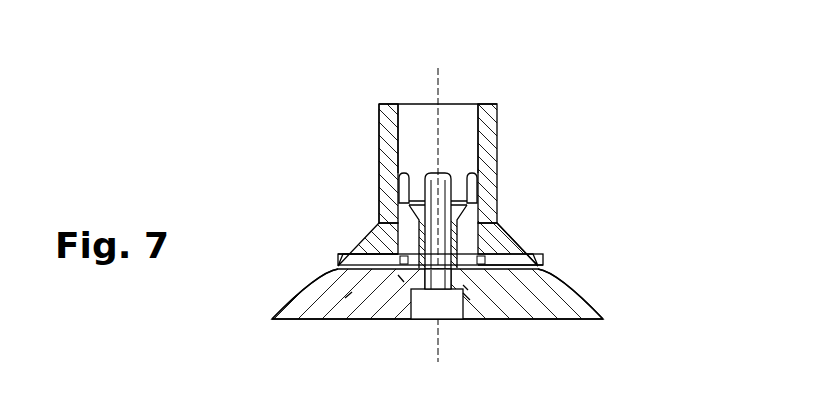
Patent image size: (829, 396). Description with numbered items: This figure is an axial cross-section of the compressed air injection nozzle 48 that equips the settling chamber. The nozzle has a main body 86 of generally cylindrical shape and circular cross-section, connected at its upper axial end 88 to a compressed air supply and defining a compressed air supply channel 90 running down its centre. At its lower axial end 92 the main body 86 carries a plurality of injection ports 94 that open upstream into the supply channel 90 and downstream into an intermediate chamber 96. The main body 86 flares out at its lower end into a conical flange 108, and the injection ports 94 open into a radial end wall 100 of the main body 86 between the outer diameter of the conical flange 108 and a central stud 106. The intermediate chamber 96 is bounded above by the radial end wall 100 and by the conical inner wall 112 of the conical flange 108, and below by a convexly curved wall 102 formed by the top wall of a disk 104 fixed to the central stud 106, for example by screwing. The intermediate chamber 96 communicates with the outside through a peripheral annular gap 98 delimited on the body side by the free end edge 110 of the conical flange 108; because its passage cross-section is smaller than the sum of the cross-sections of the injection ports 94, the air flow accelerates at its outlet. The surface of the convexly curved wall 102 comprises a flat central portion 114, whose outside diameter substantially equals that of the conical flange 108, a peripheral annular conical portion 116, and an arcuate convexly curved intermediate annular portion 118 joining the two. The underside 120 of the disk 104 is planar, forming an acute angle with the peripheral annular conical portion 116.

The air injection nozzle 48 is at (548, 134).
The main body 86 is at (360, 152).
The upper axial end 88 is at (482, 104).
The compressed air supply channel 90 is at (423, 125).
The lower axial end 92 is at (493, 295).
The injection ports 94 is at (398, 275).
The intermediate chamber 96 is at (378, 238).
The peripheral annular gap 98 is at (340, 263).
The radial end wall 100 is at (500, 260).
The convexly curved wall 102 is at (292, 283).
The disk 104 is at (598, 293).
The central stud 106 is at (411, 305).
The conical flange 108 is at (512, 218).
The free end edge 110 is at (545, 268).
The conical inner wall 112 is at (345, 298).
The flat central portion 114 is at (343, 266).
The peripheral annular conical portion 116 is at (600, 318).
The convexly curved intermediate annular portion 118 is at (548, 277).
The underside 120 is at (307, 320).